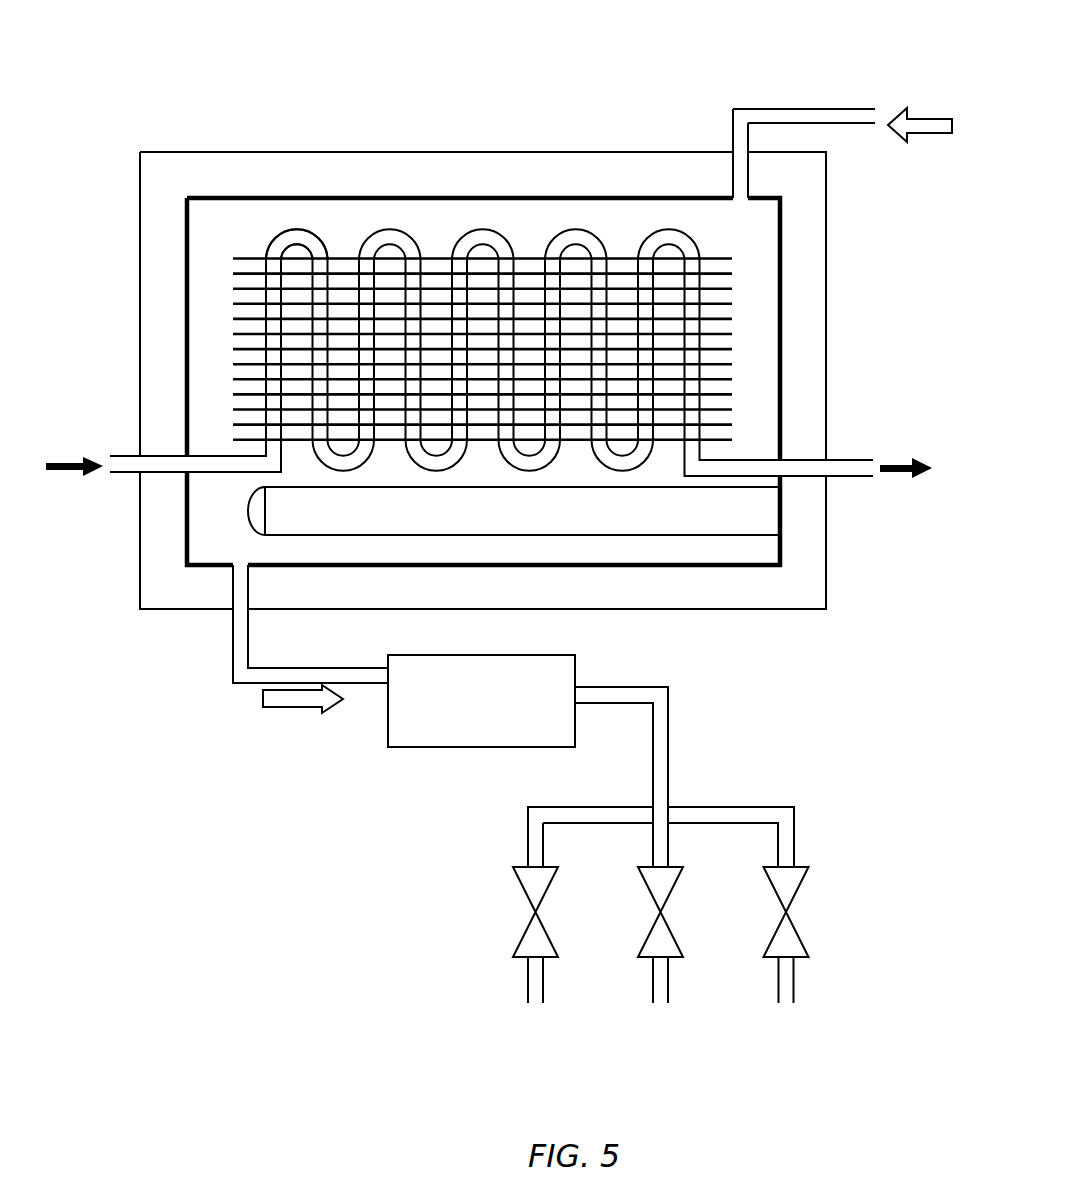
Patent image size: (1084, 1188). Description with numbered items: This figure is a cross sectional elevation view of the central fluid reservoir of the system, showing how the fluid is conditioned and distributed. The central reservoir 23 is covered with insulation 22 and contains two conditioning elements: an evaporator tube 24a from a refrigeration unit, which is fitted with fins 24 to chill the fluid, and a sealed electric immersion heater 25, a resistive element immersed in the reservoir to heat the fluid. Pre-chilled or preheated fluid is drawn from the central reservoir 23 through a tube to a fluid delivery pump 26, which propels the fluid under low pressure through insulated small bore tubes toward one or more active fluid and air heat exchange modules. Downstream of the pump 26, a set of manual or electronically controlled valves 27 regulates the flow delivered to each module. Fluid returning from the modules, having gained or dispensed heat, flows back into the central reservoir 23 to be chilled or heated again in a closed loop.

The insulation 22 is at (608, 169).
The central reservoir 23 is at (470, 197).
The refrigeration evaporator tube fin 24 is at (342, 271).
The evaporator tube of refrigeration unit 24a is at (303, 230).
The electric immersion heater 25 is at (732, 505).
The fluid delivery pump 26 is at (435, 691).
The electronic controlled valve 27 is at (542, 943).